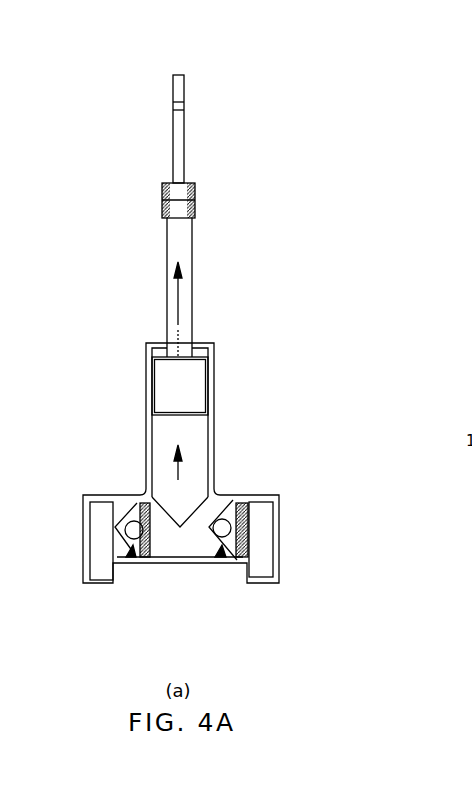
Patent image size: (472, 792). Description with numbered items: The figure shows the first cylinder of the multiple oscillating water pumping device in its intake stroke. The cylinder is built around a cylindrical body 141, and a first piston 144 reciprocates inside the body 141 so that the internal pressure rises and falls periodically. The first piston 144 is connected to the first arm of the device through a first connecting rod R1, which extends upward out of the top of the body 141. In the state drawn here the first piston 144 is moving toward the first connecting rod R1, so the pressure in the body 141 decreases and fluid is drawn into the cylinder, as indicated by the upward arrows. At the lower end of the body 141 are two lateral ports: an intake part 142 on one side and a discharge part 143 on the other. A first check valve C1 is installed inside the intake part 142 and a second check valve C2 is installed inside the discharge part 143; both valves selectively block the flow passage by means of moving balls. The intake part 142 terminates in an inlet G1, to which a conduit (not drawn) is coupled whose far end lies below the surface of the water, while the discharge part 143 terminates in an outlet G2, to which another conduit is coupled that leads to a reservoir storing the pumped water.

The first connecting rod R1 is at (184, 150).
The body 141 is at (148, 432).
The intake part 142 is at (93, 490).
The discharge part 143 is at (262, 493).
The first piston 144 is at (200, 386).
The first check valve C1 is at (133, 566).
The second check valve C2 is at (225, 566).
The inlet G1 is at (98, 583).
The outlet G2 is at (265, 583).